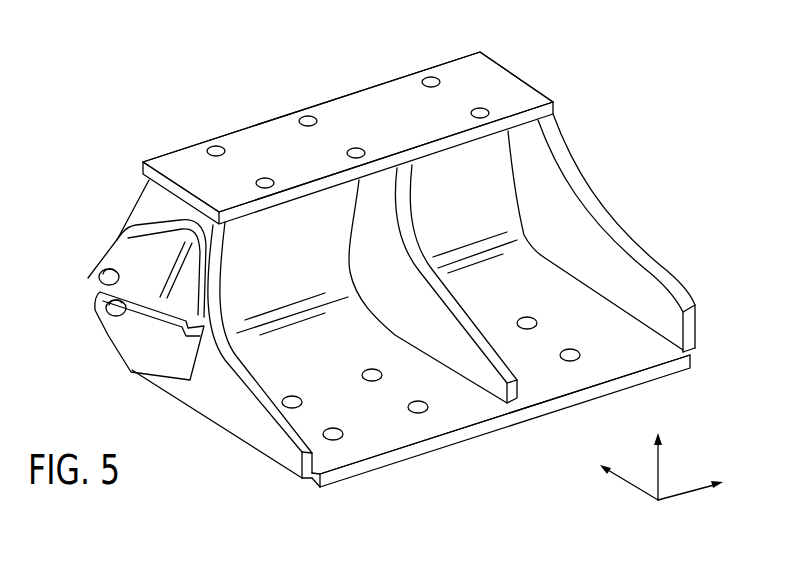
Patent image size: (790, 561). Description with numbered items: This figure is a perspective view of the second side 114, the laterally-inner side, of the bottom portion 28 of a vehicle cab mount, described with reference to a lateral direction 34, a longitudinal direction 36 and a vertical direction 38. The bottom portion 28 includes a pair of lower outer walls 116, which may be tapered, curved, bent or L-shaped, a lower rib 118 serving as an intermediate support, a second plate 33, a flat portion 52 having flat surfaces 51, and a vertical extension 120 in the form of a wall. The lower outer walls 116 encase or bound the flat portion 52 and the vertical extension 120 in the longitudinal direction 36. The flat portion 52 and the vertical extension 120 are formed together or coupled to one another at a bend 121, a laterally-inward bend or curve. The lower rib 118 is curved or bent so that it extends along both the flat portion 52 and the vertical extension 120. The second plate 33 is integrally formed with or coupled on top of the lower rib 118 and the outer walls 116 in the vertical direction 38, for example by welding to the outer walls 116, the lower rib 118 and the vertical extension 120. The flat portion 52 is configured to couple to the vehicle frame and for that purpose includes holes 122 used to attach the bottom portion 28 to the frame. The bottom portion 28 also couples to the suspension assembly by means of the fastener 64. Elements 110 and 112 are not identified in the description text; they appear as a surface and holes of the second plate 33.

The bottom portion 28 is at (428, 314).
The second plate 33 is at (518, 74).
The lateral axis or direction 34 is at (635, 490).
The longitudinal axis or direction 36 is at (687, 497).
The vertical axis or direction 38 is at (660, 473).
The flat surfaces 51 is at (486, 416).
The flat portion 52 is at (470, 416).
The fastener 64 is at (128, 350).
The upper surface of top plate 110 is at (359, 107).
The mounting holes 112 is at (216, 147).
The second side 114 is at (520, 266).
The lower outer walls 116 is at (598, 218).
The lower rib 118 is at (522, 388).
The vertical extension 120 is at (483, 296).
The bend 121 is at (283, 345).
The holes 122 is at (340, 433).